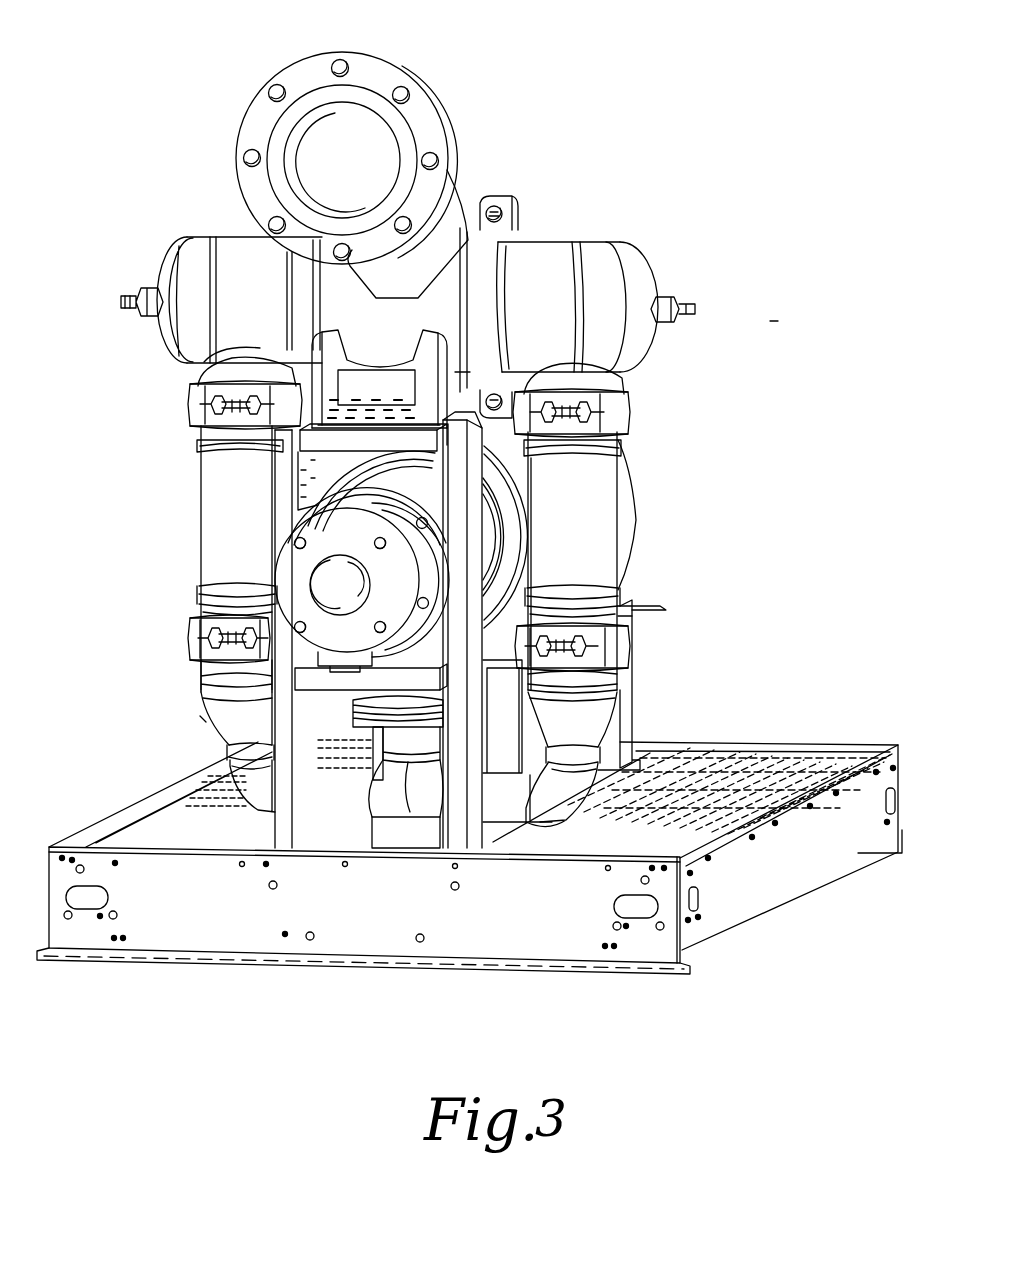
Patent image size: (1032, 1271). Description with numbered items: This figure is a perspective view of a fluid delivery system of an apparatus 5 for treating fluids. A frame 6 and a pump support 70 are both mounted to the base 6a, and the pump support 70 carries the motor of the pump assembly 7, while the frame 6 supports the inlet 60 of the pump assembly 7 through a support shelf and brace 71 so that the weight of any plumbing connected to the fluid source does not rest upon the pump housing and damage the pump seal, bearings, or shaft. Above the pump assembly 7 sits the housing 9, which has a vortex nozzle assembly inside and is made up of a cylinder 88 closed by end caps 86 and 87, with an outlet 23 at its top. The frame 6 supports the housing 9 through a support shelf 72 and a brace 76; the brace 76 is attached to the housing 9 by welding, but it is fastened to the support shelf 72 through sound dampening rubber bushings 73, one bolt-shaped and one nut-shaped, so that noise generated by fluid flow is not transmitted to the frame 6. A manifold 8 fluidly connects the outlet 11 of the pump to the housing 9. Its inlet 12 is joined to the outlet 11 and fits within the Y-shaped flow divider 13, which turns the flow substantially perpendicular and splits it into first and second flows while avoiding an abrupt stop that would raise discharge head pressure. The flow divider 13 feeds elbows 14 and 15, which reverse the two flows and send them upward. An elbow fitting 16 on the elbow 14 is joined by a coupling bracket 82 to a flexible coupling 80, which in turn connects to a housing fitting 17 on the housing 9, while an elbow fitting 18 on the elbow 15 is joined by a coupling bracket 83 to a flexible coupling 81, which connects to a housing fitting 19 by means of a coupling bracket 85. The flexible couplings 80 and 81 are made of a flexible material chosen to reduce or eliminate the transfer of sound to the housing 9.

The apparatus for treating fluids 5 is at (776, 322).
The frame 6 is at (288, 734).
The base 6a is at (366, 925).
The pump assembly 7 is at (632, 502).
The manifold 8 is at (198, 718).
The housing 9 is at (474, 160).
The outlet 11 is at (372, 700).
The inlet 12 is at (414, 742).
The flow divider 13 is at (436, 802).
The elbow 14 is at (546, 814).
The elbow 15 is at (268, 800).
The elbow fitting 16 is at (202, 686).
The housing fitting 17 is at (202, 374).
The elbow fitting 18 is at (618, 688).
The housing fitting 19 is at (600, 382).
The outlet 23 is at (314, 62).
The inlet 60 is at (278, 582).
The pump support 70 is at (632, 674).
The support shelf and brace 71 is at (440, 683).
The support shelf 72 is at (258, 448).
The bushings 73 is at (396, 404).
The brace 76 is at (460, 378).
The flexible coupling 80 is at (200, 560).
The flexible coupling 81 is at (606, 572).
The coupling bracket 82 is at (190, 643).
The coupling bracket 83 is at (622, 644).
The coupling bracket 85 is at (622, 408).
The end cap 86 is at (190, 240).
The end cap 87 is at (705, 238).
The cylinder 88 is at (538, 240).